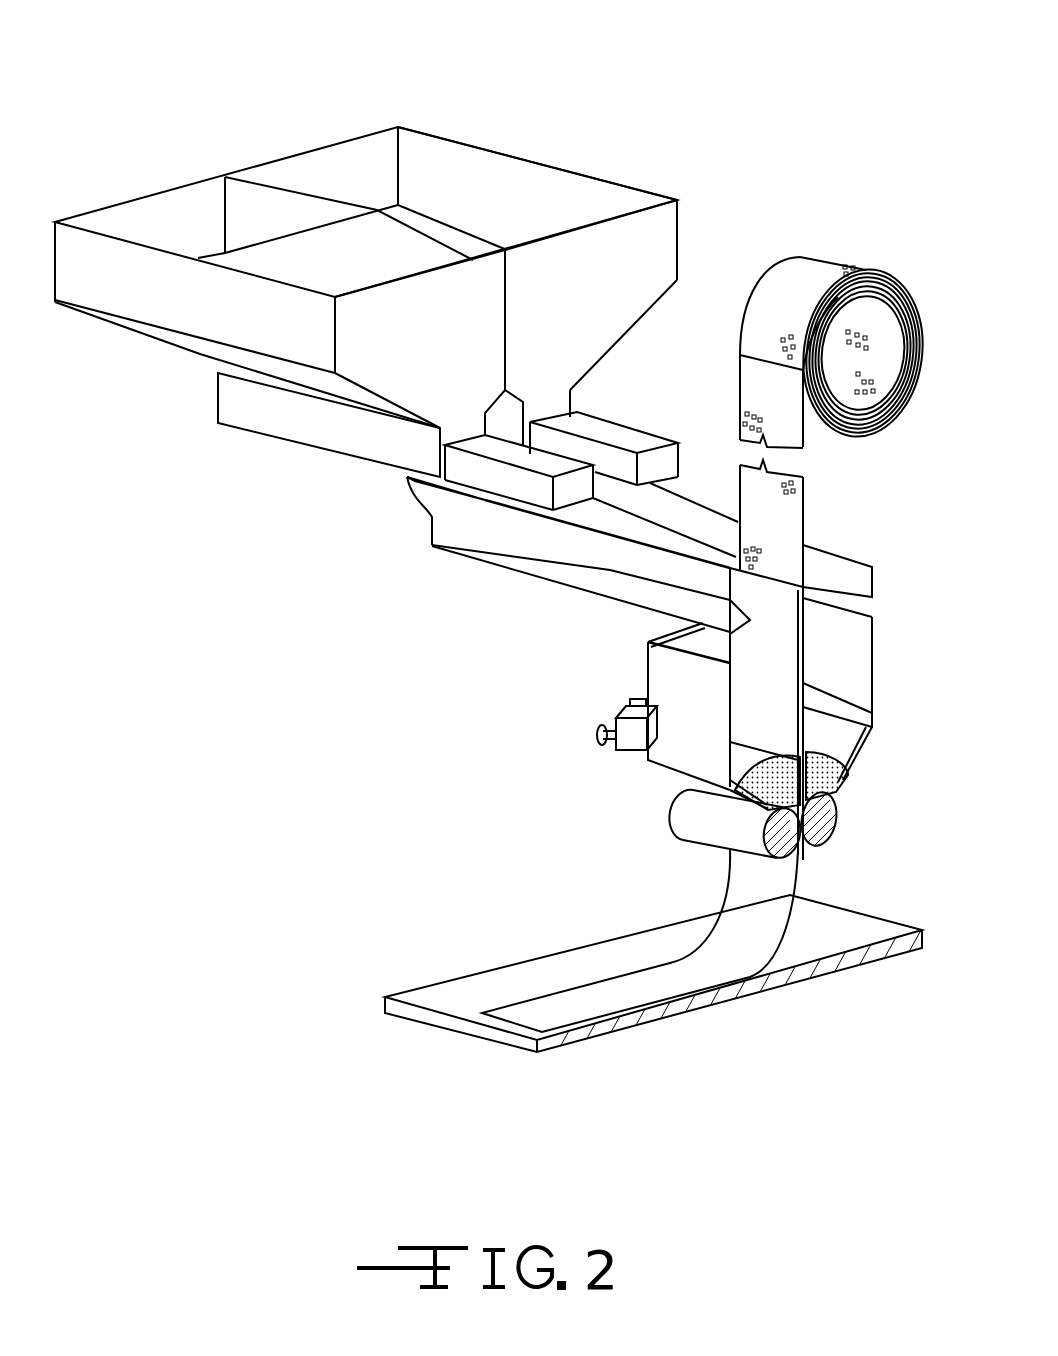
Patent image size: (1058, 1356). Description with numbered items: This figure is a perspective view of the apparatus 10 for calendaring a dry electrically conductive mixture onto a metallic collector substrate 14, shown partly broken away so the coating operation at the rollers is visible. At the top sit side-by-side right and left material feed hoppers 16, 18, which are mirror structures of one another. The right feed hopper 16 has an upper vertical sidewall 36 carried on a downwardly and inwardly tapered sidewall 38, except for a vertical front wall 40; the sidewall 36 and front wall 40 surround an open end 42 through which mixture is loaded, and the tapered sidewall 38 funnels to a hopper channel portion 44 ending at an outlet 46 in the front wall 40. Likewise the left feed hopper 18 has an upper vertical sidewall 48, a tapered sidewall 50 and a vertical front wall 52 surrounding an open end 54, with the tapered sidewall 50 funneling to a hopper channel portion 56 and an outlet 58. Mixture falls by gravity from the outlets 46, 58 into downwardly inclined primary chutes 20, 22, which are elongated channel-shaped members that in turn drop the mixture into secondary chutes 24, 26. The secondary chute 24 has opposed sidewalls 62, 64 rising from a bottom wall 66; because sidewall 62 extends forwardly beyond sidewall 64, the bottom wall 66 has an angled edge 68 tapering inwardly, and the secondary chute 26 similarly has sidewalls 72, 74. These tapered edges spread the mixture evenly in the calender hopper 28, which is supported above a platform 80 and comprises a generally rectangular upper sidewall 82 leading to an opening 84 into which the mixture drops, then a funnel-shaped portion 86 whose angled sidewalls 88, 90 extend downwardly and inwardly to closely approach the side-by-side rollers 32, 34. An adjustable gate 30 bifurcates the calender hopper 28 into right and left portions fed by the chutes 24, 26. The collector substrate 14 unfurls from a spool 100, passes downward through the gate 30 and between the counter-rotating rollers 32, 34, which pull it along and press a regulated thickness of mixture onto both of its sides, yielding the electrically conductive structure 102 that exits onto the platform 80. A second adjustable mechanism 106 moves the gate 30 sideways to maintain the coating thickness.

The apparatus 10 is at (716, 138).
The collector substrate 14 is at (820, 488).
The right feed hopper 16 is at (512, 157).
The left feed hopper 18 is at (130, 197).
The primary chute 20 is at (607, 420).
The primary chute 22 is at (485, 500).
The secondary chute 24 is at (710, 553).
The secondary chute 26 is at (505, 533).
The calender hopper 28 is at (875, 650).
The adjustable gate 30 is at (870, 713).
The roller 32 is at (837, 817).
The roller 34 is at (705, 832).
The upper vertical sidewall 36 is at (545, 200).
The tapered sidewall 38 is at (427, 218).
The front wall 40 is at (640, 258).
The open end 42 is at (384, 183).
The hopper channel portion 44 is at (502, 408).
The outlet 46 is at (557, 423).
The upper vertical sidewall 48 is at (175, 222).
The tapered sidewall 50 is at (190, 353).
The front wall 52 is at (388, 305).
The open end 54 is at (262, 243).
The hopper channel portion 56 is at (320, 427).
The outlet 58 is at (467, 447).
The sidewall 62 is at (840, 568).
The sidewall 64 is at (712, 552).
The bottom wall 66 is at (820, 587).
The angled edge 68 is at (847, 598).
The sidewall 72 is at (578, 535).
The sidewall 74 is at (580, 570).
The platform 80 is at (825, 930).
The upper sidewall 82 is at (675, 685).
The opening 84 is at (703, 642).
The funnel-shaped portion 86 is at (843, 780).
The angled sidewall 88 is at (867, 743).
The angled sidewall 90 is at (680, 803).
The spool 100 is at (833, 262).
The electrically conductive structure 102 is at (672, 982).
The second adjustable mechanism 106 is at (578, 750).